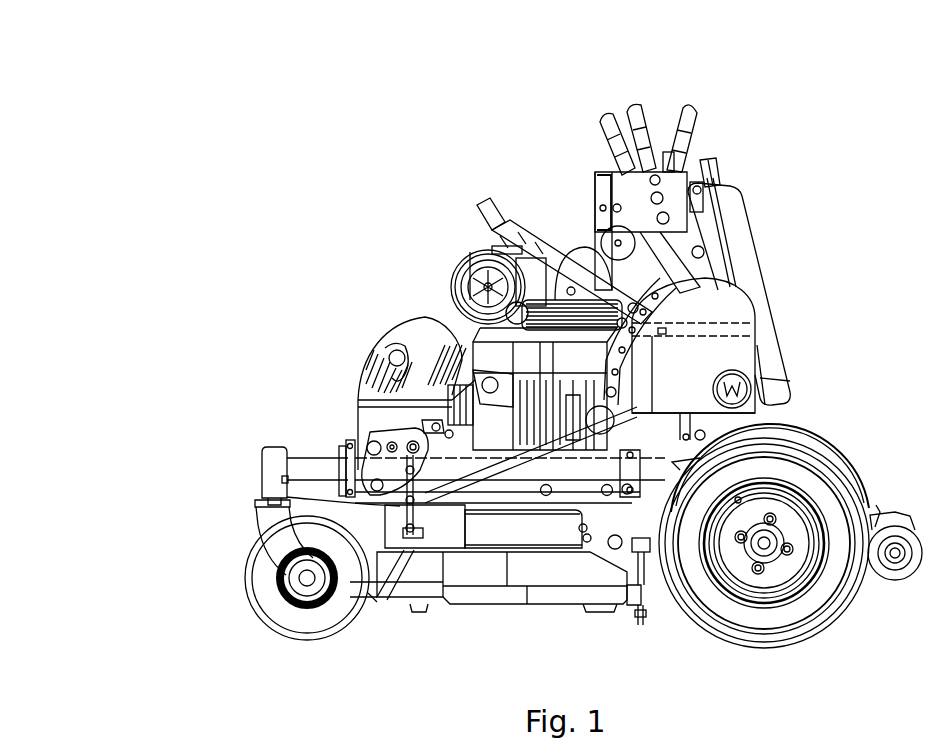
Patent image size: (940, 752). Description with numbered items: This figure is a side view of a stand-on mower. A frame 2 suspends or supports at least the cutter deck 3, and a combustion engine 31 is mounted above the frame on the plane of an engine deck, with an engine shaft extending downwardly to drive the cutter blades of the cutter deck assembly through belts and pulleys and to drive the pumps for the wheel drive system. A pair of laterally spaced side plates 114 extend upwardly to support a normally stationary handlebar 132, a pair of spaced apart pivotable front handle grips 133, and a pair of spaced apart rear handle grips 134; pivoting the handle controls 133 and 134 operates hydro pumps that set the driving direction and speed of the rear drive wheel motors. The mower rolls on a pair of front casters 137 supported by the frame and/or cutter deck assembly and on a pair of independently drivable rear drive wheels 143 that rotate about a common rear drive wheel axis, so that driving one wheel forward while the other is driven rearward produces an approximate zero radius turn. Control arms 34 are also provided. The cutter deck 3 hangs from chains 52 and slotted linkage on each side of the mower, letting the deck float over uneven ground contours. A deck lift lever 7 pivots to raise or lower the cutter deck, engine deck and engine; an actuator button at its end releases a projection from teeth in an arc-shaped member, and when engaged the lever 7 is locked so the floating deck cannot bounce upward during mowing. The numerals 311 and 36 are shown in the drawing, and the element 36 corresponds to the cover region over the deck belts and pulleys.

The frame 2 is at (315, 468).
The cutter deck 3 is at (477, 573).
The deck lift lever 7 is at (492, 200).
The engine 31 is at (460, 262).
The air intake tube 311 is at (487, 203).
The control arms 34 is at (645, 580).
The pulley cover 36 is at (547, 523).
The chains 52 is at (262, 493).
The side plates 114 is at (690, 233).
The handlebar 132 is at (643, 123).
The front handle grips 133 is at (612, 143).
The rear handle grips 134 is at (690, 123).
The front casters 137 is at (267, 600).
The rear drive wheels 143 is at (817, 600).